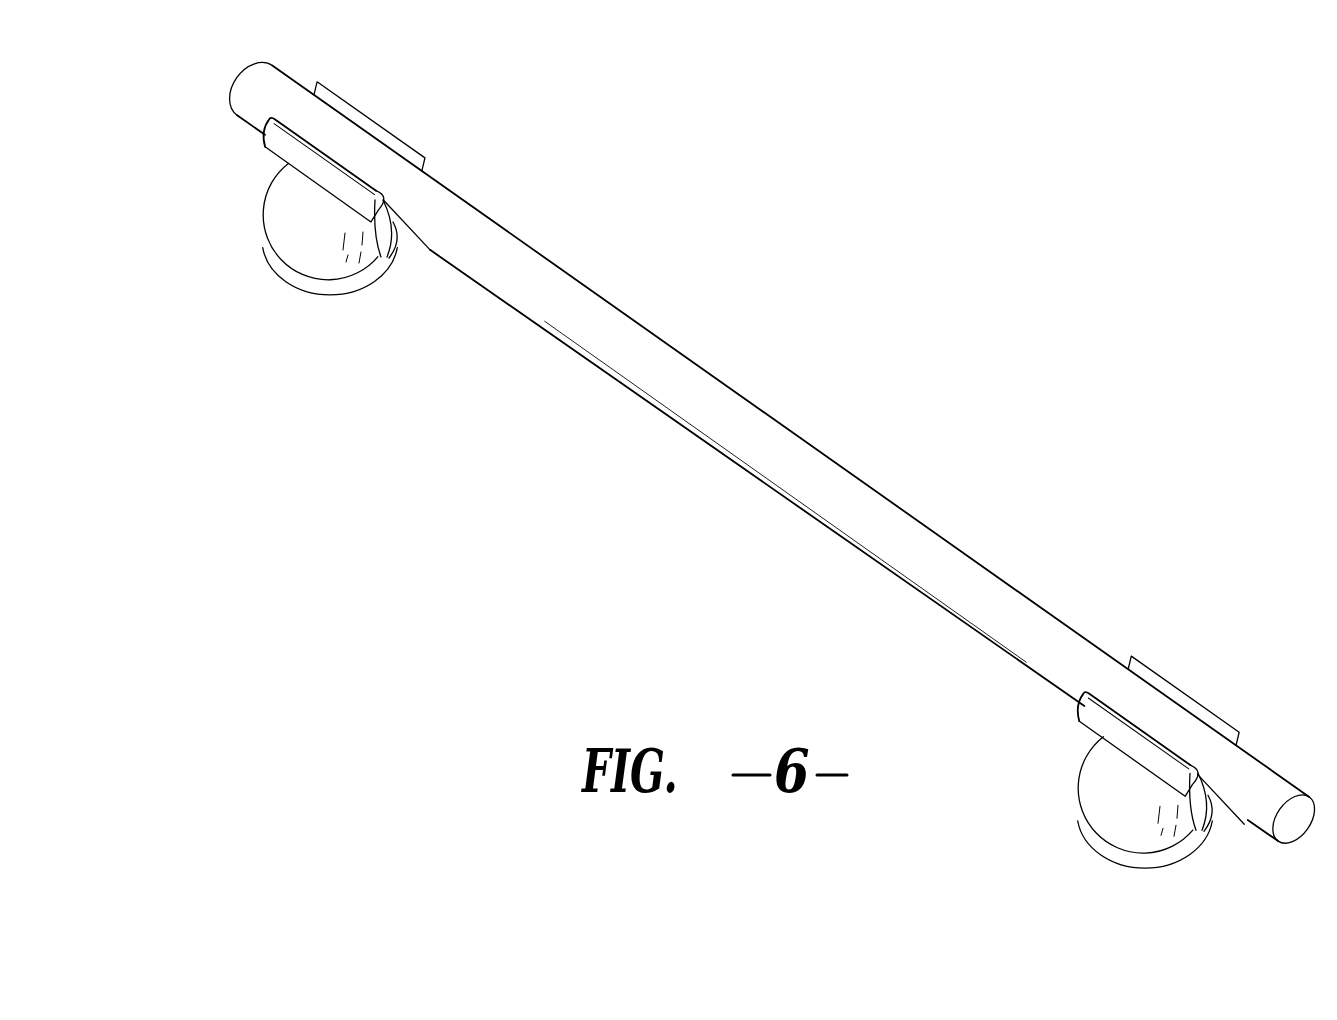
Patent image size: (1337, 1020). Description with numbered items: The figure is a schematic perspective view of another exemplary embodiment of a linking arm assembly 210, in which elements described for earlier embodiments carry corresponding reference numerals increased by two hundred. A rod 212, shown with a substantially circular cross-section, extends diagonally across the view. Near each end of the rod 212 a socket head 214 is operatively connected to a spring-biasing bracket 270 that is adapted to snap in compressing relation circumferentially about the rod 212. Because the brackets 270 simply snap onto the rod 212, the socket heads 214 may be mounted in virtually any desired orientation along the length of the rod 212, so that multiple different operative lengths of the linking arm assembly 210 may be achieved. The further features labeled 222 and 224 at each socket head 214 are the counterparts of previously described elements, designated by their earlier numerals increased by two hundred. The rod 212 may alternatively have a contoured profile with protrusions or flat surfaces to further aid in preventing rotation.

The linking arm assembly 210 is at (702, 231).
The rod 212 is at (773, 418).
The socket head 214 is at (720, 536).
The ball 222 is at (297, 253).
The pad 224 is at (353, 293).
The spring-biasing bracket 270 is at (260, 137).